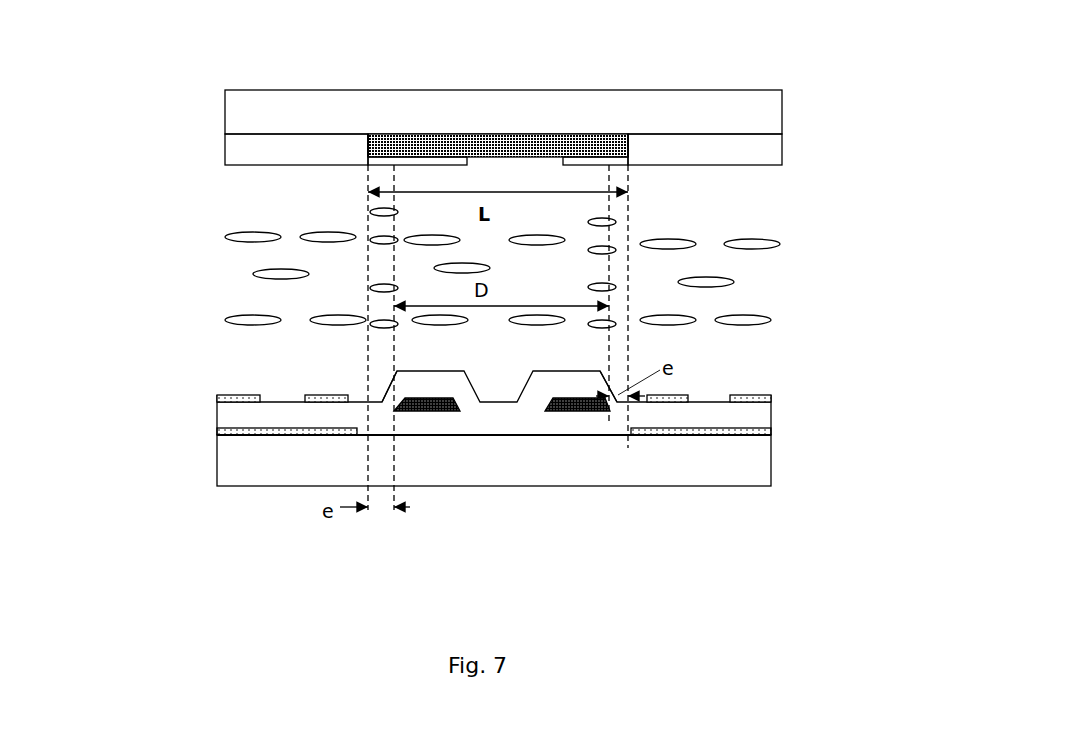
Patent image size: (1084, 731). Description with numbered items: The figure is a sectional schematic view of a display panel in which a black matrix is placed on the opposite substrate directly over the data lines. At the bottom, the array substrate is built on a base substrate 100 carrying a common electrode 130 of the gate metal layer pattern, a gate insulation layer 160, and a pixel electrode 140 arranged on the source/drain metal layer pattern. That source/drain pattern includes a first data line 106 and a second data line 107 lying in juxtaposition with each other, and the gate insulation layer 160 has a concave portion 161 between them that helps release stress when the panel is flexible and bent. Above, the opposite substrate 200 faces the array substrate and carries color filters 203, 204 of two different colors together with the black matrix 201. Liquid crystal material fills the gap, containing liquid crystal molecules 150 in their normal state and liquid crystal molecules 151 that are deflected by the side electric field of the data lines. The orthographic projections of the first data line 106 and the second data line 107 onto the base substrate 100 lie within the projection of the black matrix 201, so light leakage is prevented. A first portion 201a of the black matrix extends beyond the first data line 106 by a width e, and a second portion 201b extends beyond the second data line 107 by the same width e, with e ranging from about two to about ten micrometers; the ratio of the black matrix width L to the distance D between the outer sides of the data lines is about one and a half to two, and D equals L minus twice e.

The base substrate 100 is at (760, 472).
The first data line 106 is at (394, 411).
The second data line 107 is at (602, 411).
The common electrode 130 is at (760, 430).
The pixel electrode 140 is at (771, 395).
The liquid crystal molecules 150 is at (760, 240).
The liquid crystal molecules interfered by side electric field 151 is at (368, 325).
The gate insulation layer 160 is at (463, 398).
The concave portion 161 is at (516, 403).
The opposite substrate 200 is at (263, 108).
The black matrix 201 is at (498, 132).
The first portion of black matrix 201a is at (380, 145).
The second portion of black matrix 201b is at (626, 138).
The color filter 203 is at (263, 147).
The color filter 204 is at (763, 156).